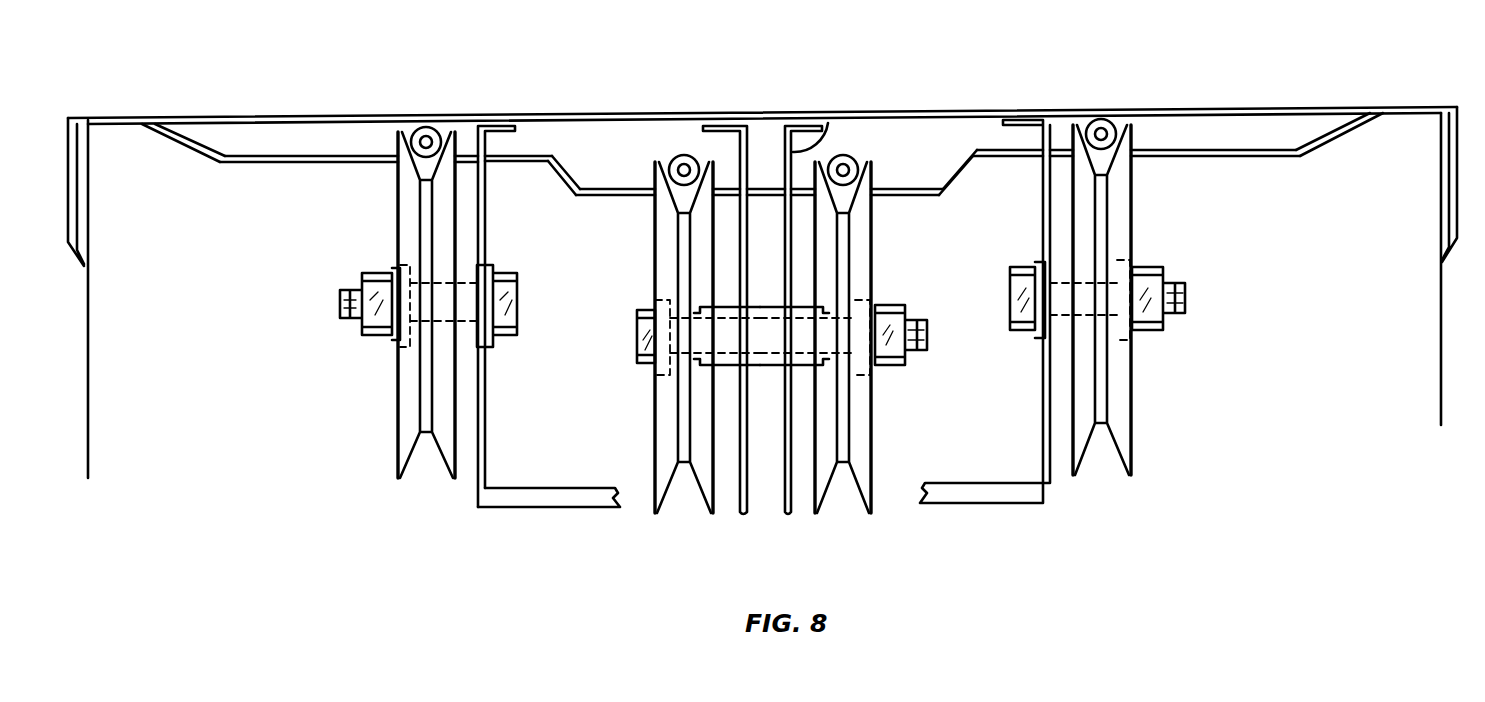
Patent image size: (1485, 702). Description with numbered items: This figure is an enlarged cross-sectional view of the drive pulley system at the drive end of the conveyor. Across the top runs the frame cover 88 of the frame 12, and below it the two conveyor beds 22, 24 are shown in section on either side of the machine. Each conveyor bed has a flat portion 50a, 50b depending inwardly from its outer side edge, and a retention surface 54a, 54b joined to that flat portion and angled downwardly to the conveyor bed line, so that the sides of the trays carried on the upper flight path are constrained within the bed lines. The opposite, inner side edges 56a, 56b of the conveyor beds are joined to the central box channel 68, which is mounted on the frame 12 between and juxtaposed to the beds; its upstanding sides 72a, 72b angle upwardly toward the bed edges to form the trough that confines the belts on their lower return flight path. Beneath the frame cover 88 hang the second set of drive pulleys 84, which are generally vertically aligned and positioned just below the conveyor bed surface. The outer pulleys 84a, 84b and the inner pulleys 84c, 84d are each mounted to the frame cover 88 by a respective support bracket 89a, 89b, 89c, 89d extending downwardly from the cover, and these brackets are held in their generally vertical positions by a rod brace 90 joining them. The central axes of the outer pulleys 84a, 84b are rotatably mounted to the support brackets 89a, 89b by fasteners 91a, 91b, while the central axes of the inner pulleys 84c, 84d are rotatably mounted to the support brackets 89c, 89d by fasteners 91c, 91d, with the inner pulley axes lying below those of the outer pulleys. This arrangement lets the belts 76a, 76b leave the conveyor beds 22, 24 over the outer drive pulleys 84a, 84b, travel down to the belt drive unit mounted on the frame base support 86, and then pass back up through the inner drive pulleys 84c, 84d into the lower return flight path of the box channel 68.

The frame 12 is at (1387, 105).
The conveyor bed 22 is at (298, 165).
The conveyor bed 24 is at (1236, 152).
The flat portion 50a is at (1421, 120).
The flat portion 50b is at (115, 127).
The retention surface 54a is at (1330, 148).
The retention surface 54b is at (185, 148).
The side edge 56a is at (978, 152).
The side edge 56b is at (552, 183).
The central box channel 68 is at (612, 196).
The upstanding side 72a is at (955, 180).
The upstanding side 72b is at (583, 167).
The belt 76a is at (846, 152).
The belt 76b is at (422, 128).
The second set of drive pulleys 84 is at (404, 267).
The outer pulley 84a is at (1120, 160).
The outer pulley 84b is at (452, 160).
The inner pulley 84c is at (862, 196).
The inner pulley 84d is at (660, 273).
The frame base support 86 is at (830, 120).
The frame cover 88 is at (215, 118).
The support bracket 89a is at (1047, 118).
The support bracket 89b is at (486, 196).
The support bracket 89c is at (786, 118).
The support bracket 89d is at (722, 125).
The rod brace 90 is at (523, 495).
The fastener 91a is at (1172, 276).
The fastener 91b is at (380, 337).
The fastener 91c is at (898, 358).
The fastener 91d is at (640, 345).